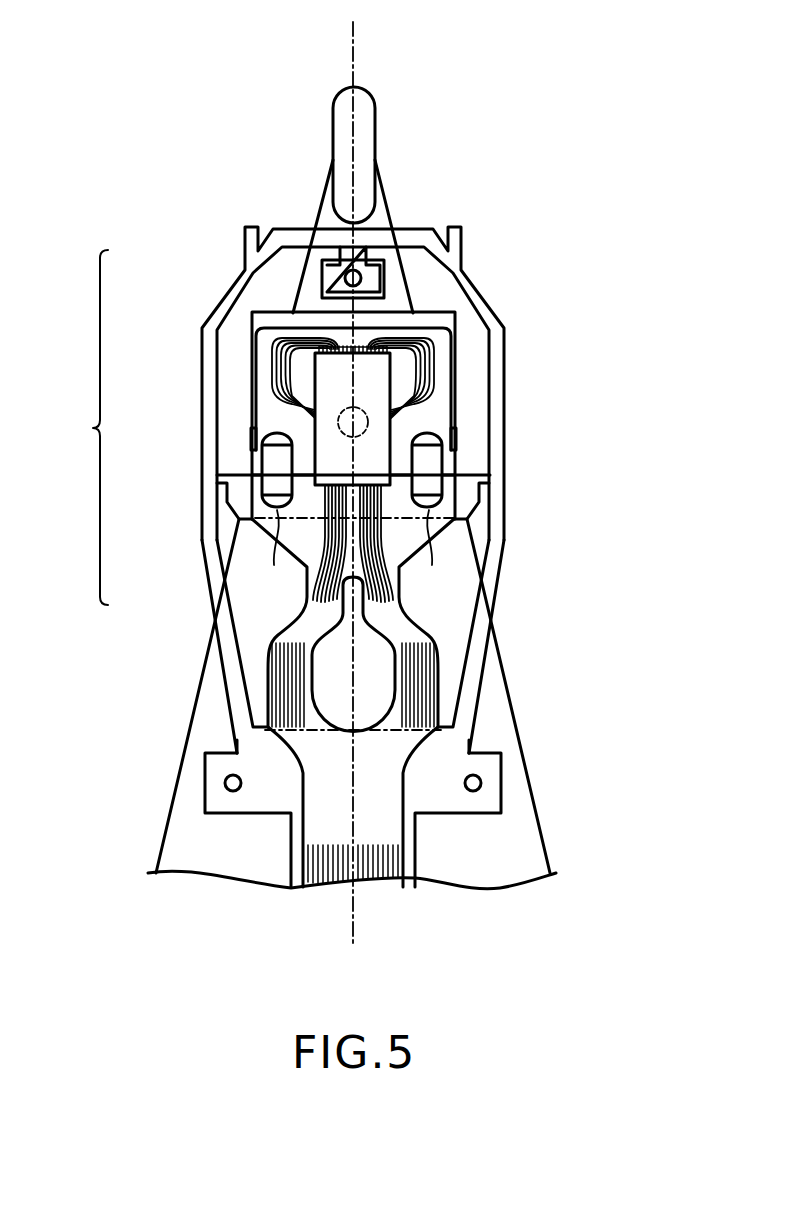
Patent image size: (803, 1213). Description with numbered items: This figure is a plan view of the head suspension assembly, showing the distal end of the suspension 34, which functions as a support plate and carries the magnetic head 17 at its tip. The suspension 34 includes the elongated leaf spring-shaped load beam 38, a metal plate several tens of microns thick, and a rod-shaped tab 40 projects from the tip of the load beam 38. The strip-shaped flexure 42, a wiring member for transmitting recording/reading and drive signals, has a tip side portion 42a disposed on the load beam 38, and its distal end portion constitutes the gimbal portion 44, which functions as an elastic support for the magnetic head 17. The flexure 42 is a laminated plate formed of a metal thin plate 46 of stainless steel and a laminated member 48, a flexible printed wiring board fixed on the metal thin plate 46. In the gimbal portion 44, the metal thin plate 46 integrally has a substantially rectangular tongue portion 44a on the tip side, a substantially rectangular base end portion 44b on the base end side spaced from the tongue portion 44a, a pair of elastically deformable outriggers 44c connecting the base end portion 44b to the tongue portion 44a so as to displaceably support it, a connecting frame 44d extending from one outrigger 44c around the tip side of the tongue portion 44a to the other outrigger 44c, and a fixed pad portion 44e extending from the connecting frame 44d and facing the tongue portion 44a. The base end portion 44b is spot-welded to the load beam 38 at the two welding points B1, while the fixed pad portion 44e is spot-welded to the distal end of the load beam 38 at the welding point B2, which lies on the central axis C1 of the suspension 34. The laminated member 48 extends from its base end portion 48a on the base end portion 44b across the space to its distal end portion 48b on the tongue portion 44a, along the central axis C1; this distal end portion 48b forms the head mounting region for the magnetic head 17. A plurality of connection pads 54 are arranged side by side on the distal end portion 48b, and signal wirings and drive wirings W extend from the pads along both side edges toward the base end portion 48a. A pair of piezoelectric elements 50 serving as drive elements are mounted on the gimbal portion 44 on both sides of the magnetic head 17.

The central axis C1 is at (357, 40).
The tab 40 is at (363, 118).
The connecting frame 44d is at (210, 320).
The fixed pad portion 44e is at (337, 275).
The welding point B2 is at (362, 278).
The magnetic head 17 is at (450, 342).
The distal end portion 48b is at (262, 368).
The connection pads 54 is at (337, 346).
The tongue portion 44a is at (381, 375).
The signal wirings and drive wirings W is at (427, 382).
The gimbal portion 44 is at (93, 428).
The piezoelectric elements 50 is at (270, 485).
The outriggers 44c is at (215, 570).
The laminated member 48 is at (270, 650).
The base end portion 48a is at (322, 778).
The tip side portion 42a is at (212, 727).
The suspension 34 is at (503, 670).
The metal thin plate 46 is at (448, 800).
The base end portion 44b is at (438, 750).
The welding point B1 is at (225, 783).
The load beam 38 is at (172, 835).
The flexure 42 is at (377, 876).